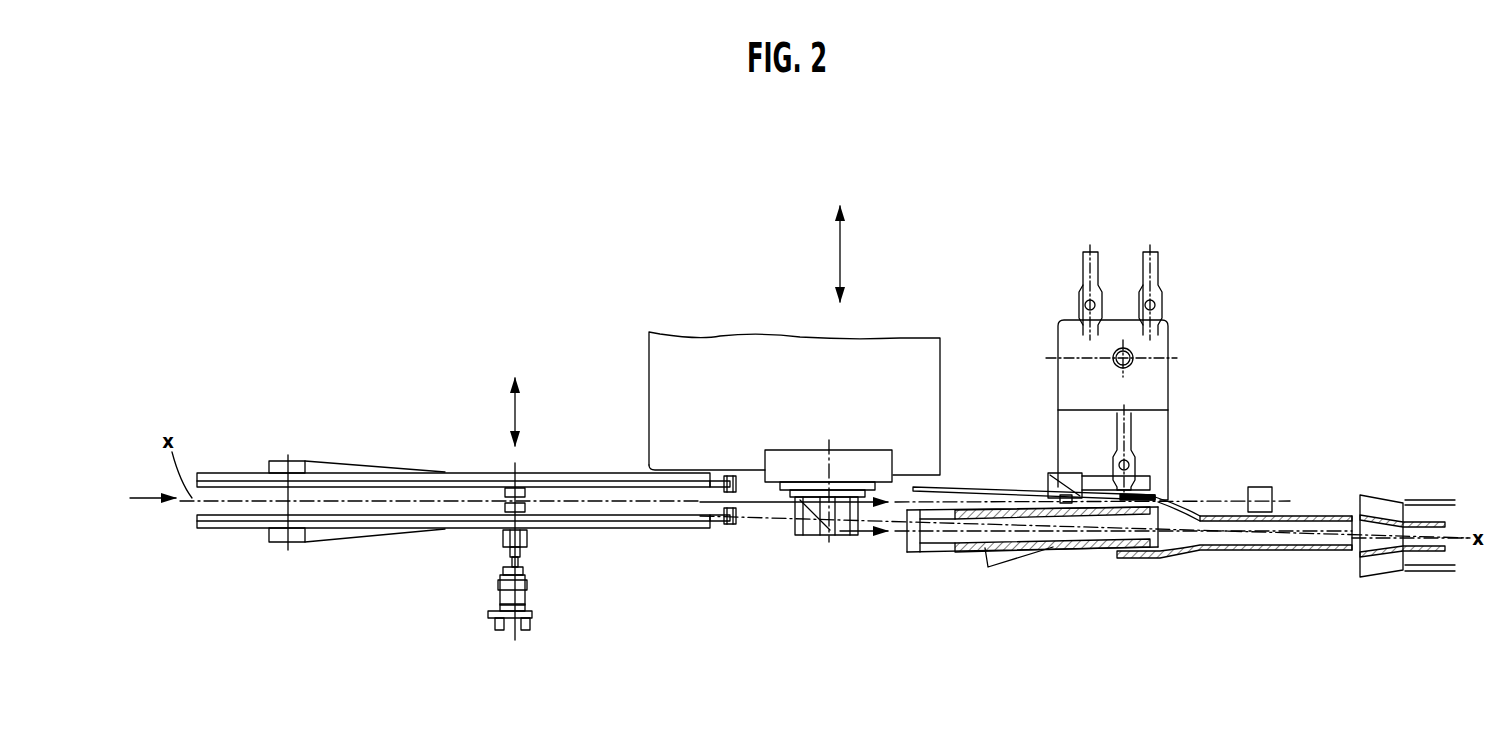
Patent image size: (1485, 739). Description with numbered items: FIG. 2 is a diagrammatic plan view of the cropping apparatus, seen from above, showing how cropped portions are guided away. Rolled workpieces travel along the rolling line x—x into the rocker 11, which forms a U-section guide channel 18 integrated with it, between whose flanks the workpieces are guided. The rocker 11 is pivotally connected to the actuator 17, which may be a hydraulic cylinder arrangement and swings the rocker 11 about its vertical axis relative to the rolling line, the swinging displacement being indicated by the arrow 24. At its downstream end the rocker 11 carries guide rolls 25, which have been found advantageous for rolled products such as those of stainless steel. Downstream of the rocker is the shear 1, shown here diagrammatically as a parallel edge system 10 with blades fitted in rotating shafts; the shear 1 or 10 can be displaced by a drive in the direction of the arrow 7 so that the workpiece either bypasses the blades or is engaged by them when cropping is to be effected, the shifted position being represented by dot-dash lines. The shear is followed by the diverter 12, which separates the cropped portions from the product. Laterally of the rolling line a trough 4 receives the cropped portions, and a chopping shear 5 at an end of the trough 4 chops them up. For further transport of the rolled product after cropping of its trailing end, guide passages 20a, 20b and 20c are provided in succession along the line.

The shear 1 is at (861, 440).
The trough 4 is at (1194, 502).
The chopping shear 5 is at (1263, 486).
The arrow 7 is at (838, 258).
The shear with parallel edge system 10 is at (721, 322).
The rocker 11 is at (428, 472).
The diverter 12 is at (1180, 392).
The actuator 17 is at (535, 586).
The guide channel 18 is at (392, 498).
The guide passage 20a is at (1010, 536).
The guide passage 20b is at (1250, 541).
The guide passage 20c is at (1424, 546).
The arrow 24 is at (518, 415).
The guide rolls 25 is at (724, 528).